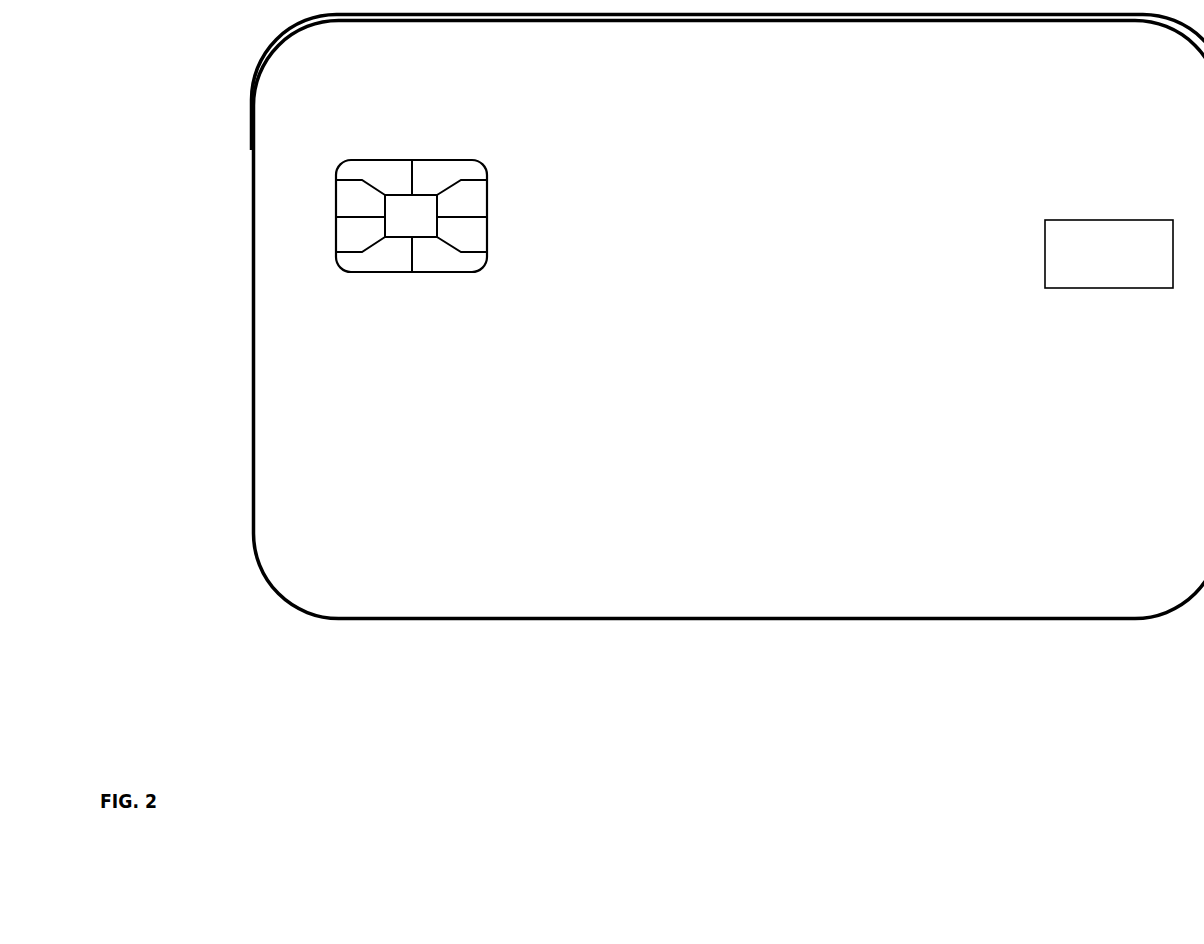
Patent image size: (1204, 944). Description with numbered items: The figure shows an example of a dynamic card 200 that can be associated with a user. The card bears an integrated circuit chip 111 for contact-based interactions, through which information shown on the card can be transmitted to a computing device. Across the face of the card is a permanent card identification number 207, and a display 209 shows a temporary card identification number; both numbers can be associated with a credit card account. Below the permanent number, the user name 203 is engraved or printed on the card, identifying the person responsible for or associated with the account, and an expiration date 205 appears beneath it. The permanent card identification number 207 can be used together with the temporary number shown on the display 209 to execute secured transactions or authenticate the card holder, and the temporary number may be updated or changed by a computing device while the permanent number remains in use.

The dynamic card 200 is at (497, 69).
The integrated circuit chip 111 is at (484, 155).
The display 209 is at (1142, 209).
The permanent card identification number 207 is at (1088, 340).
The user name 203 is at (617, 447).
The expiration date 205 is at (548, 512).